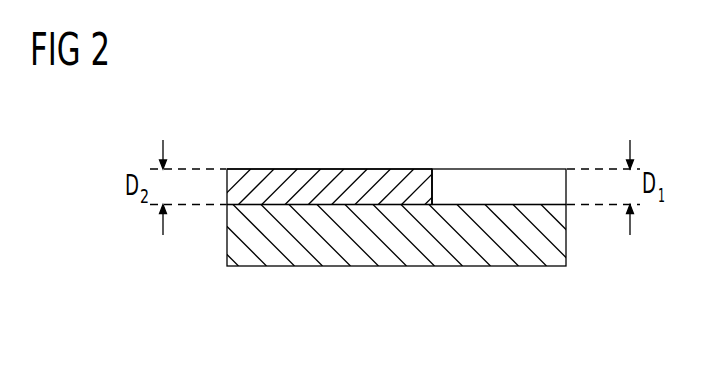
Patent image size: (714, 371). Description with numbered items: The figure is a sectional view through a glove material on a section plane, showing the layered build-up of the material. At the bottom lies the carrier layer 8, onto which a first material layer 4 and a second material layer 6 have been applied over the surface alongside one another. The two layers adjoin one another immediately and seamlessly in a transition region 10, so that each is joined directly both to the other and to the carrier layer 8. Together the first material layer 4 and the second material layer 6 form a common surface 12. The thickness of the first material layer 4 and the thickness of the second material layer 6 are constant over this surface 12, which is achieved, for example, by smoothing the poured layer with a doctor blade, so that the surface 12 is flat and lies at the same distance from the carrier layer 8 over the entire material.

The first material layer 4 is at (507, 182).
The second material layer 6 is at (279, 168).
The carrier layer 8 is at (273, 253).
The transition region 10 is at (434, 181).
The common surface 12 is at (367, 169).